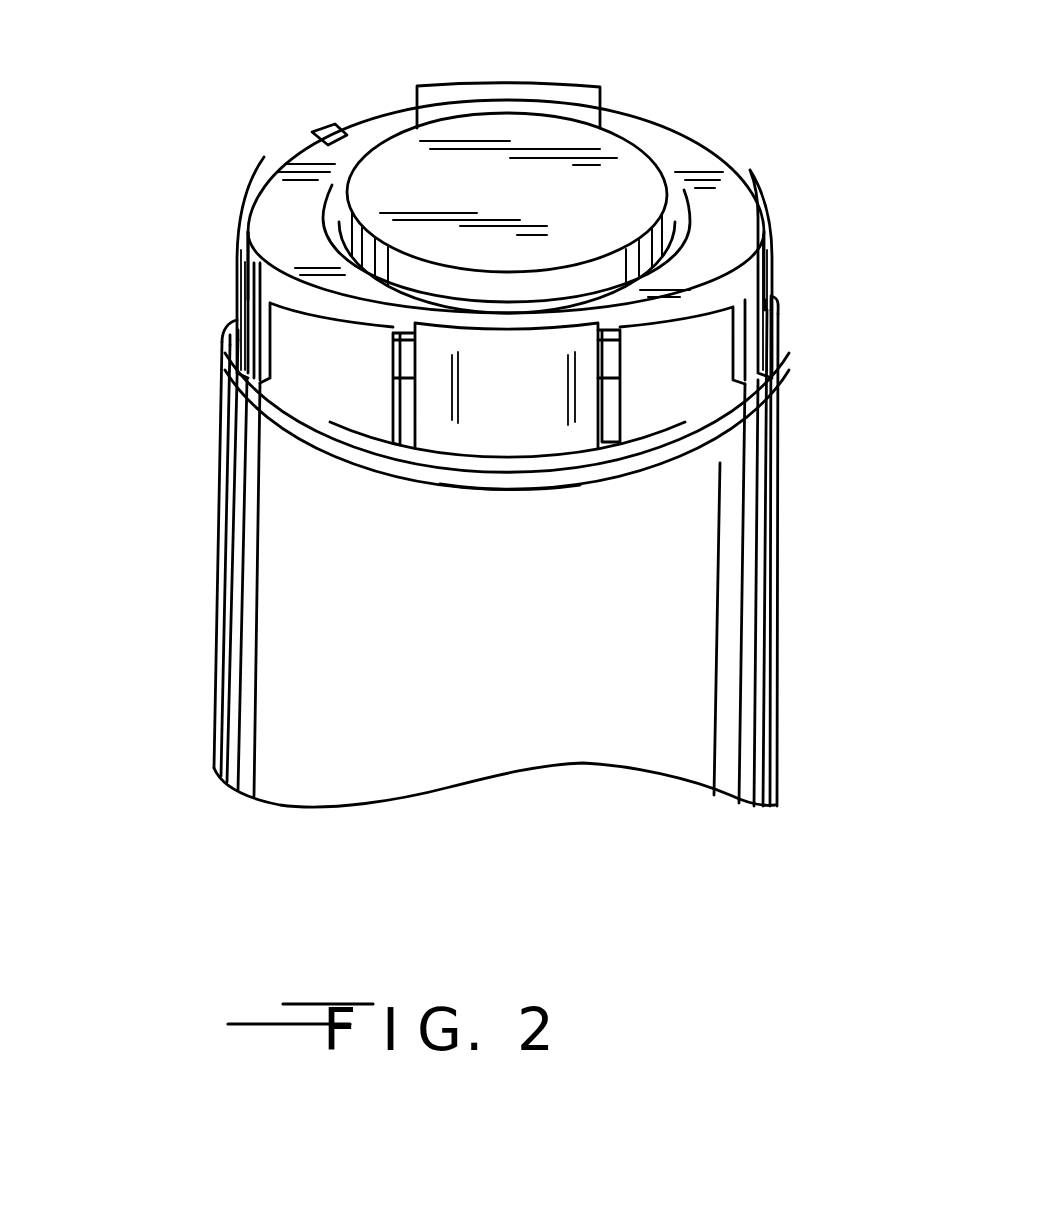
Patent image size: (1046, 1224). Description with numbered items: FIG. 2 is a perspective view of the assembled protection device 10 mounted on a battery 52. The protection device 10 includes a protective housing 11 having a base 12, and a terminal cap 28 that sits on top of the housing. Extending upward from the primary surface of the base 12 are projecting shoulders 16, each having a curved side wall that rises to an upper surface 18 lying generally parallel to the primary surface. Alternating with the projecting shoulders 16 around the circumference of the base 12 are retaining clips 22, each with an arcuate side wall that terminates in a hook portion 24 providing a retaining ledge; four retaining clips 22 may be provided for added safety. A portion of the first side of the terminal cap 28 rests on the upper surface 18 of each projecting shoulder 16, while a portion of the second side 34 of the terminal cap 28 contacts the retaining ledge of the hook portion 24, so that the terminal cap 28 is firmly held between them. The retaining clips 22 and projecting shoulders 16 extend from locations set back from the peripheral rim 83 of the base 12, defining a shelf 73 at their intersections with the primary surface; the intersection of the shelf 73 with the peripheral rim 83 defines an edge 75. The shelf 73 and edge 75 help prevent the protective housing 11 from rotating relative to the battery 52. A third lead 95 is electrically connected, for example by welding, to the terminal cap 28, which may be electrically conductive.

The protection device 10 is at (184, 447).
The protective housing 11 is at (786, 196).
The base 12 is at (443, 478).
The projecting shoulder 16 is at (303, 388).
The upper surface 18 is at (378, 337).
The retaining clip 22 is at (553, 90).
The hook portion 24 is at (260, 162).
The terminal cap 28 is at (695, 152).
The second side 34 is at (392, 106).
The battery 52 is at (521, 657).
The shelf 73 is at (225, 354).
The edge 75 is at (521, 476).
The peripheral rim 83 is at (661, 470).
The third lead 95 is at (330, 127).